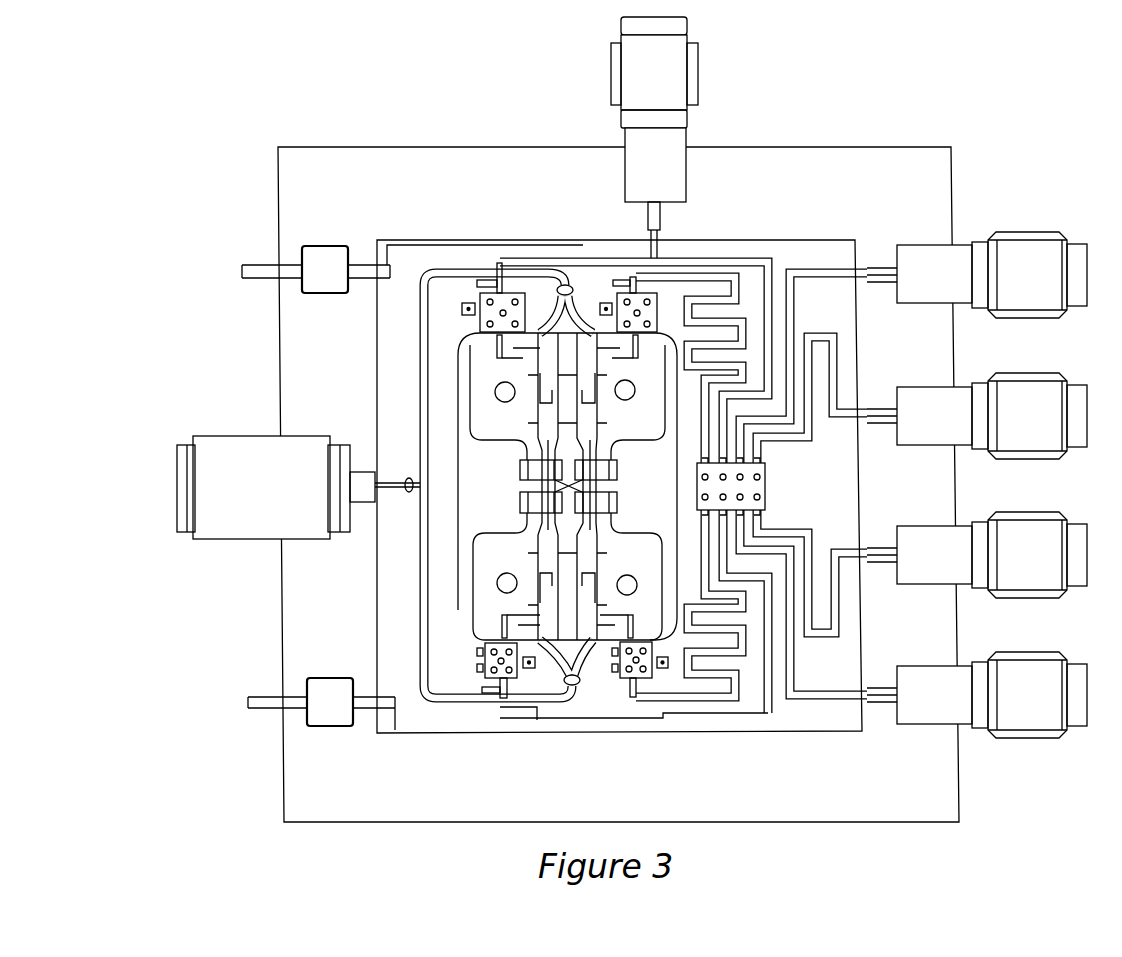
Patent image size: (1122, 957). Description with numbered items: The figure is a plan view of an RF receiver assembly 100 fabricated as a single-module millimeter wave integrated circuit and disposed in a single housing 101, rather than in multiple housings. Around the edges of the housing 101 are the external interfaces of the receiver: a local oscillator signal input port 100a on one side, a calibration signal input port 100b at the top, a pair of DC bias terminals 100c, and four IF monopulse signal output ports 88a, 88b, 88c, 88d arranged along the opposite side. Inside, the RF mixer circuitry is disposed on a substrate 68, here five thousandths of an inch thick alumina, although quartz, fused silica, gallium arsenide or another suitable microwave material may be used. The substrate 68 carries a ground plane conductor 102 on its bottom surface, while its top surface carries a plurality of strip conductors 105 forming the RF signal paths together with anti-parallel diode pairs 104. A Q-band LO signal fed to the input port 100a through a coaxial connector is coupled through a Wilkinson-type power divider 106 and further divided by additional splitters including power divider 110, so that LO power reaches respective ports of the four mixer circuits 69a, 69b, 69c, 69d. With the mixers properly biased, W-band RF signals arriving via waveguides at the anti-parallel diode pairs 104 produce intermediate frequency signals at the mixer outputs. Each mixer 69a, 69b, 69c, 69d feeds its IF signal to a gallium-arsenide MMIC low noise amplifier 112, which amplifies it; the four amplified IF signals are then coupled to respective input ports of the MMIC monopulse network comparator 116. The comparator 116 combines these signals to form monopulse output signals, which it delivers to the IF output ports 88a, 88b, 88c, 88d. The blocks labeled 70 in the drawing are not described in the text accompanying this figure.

The RF receiver assembly 100 is at (240, 190).
The local oscillator signal input port 100a is at (239, 435).
The calibration signal input port 100b is at (700, 62).
The DC bias terminals 100c is at (256, 265).
The housing 101 is at (845, 783).
The ground plane conductor 102 is at (480, 433).
The anti-parallel diode pair 104 is at (597, 447).
The strip conductors 105 is at (497, 347).
The power divider 106 is at (403, 466).
The third power divider 110 is at (575, 684).
The MMIC low noise amplifiers 112 is at (480, 325).
The MMIC monopulse network comparator 116 is at (766, 468).
The substrate 68 is at (505, 443).
The mixer circuit 69a is at (523, 428).
The mixer circuit 69b is at (647, 428).
The mixer circuit 69c is at (518, 563).
The mixer circuit 69d is at (650, 563).
The valve block 70 is at (513, 501).
The IF monopulse signal output port 88a is at (978, 242).
The IF monopulse signal output port 88b is at (978, 383).
The IF monopulse signal output port 88c is at (980, 523).
The IF monopulse signal output port 88d is at (980, 663).